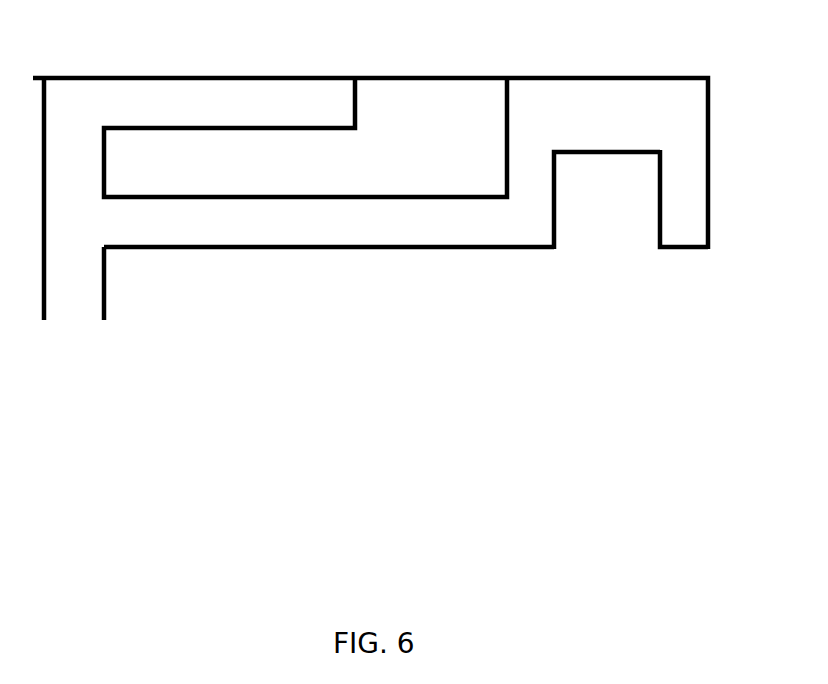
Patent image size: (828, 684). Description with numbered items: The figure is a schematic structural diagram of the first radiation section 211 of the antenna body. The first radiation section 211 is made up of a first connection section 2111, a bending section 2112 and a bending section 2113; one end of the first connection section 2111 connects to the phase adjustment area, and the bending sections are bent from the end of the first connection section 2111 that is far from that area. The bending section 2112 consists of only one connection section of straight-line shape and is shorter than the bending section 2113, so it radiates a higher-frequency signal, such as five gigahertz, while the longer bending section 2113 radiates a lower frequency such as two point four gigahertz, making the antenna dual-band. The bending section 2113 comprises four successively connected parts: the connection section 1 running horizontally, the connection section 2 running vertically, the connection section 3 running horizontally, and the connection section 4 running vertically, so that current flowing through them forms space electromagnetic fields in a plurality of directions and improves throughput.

The first radiation section 211 is at (370, 324).
The first connection section 2111 is at (62, 192).
The bending section 2112 is at (239, 100).
The bending section 2113 is at (406, 282).
The connection section 1 is at (453, 215).
The connection section 2 is at (524, 178).
The connection section 3 is at (607, 108).
The connection section 4 is at (678, 190).